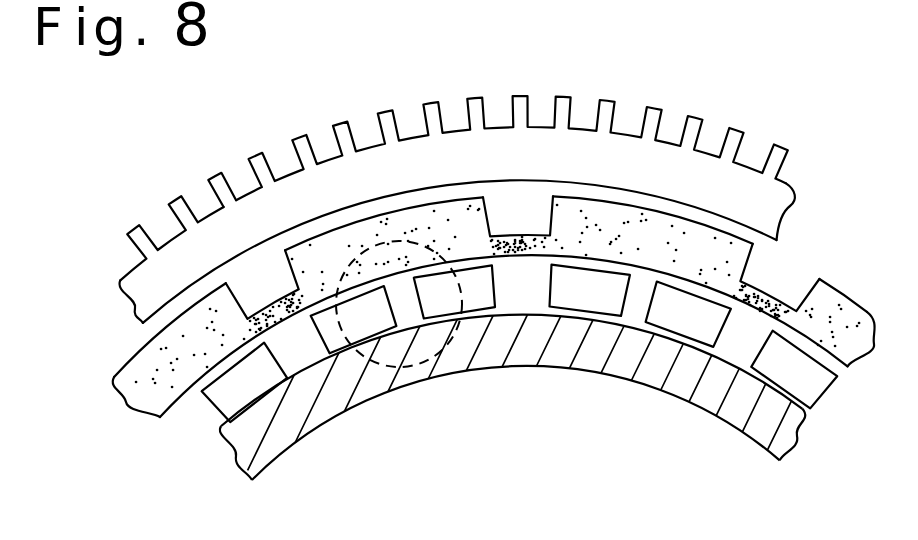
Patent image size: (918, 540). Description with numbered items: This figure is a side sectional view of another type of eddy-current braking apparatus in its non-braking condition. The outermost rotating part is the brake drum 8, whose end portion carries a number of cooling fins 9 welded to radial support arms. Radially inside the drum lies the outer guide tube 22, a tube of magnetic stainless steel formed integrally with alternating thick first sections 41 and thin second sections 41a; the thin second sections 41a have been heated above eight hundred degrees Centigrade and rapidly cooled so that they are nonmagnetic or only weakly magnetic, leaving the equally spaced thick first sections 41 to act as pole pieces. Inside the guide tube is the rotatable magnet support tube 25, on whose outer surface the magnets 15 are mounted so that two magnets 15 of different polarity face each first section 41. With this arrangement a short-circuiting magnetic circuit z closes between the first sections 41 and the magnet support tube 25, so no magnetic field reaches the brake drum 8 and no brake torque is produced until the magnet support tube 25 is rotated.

The brake drum 8 is at (137, 292).
The cooling fins 9 is at (227, 188).
The magnets 15 is at (495, 302).
The outer guide tube 22 is at (122, 360).
The magnet support tube 25 is at (295, 436).
The first sections 41 is at (641, 236).
The second sections 41a is at (517, 253).
The short-circuiting magnetic circuit z is at (432, 358).